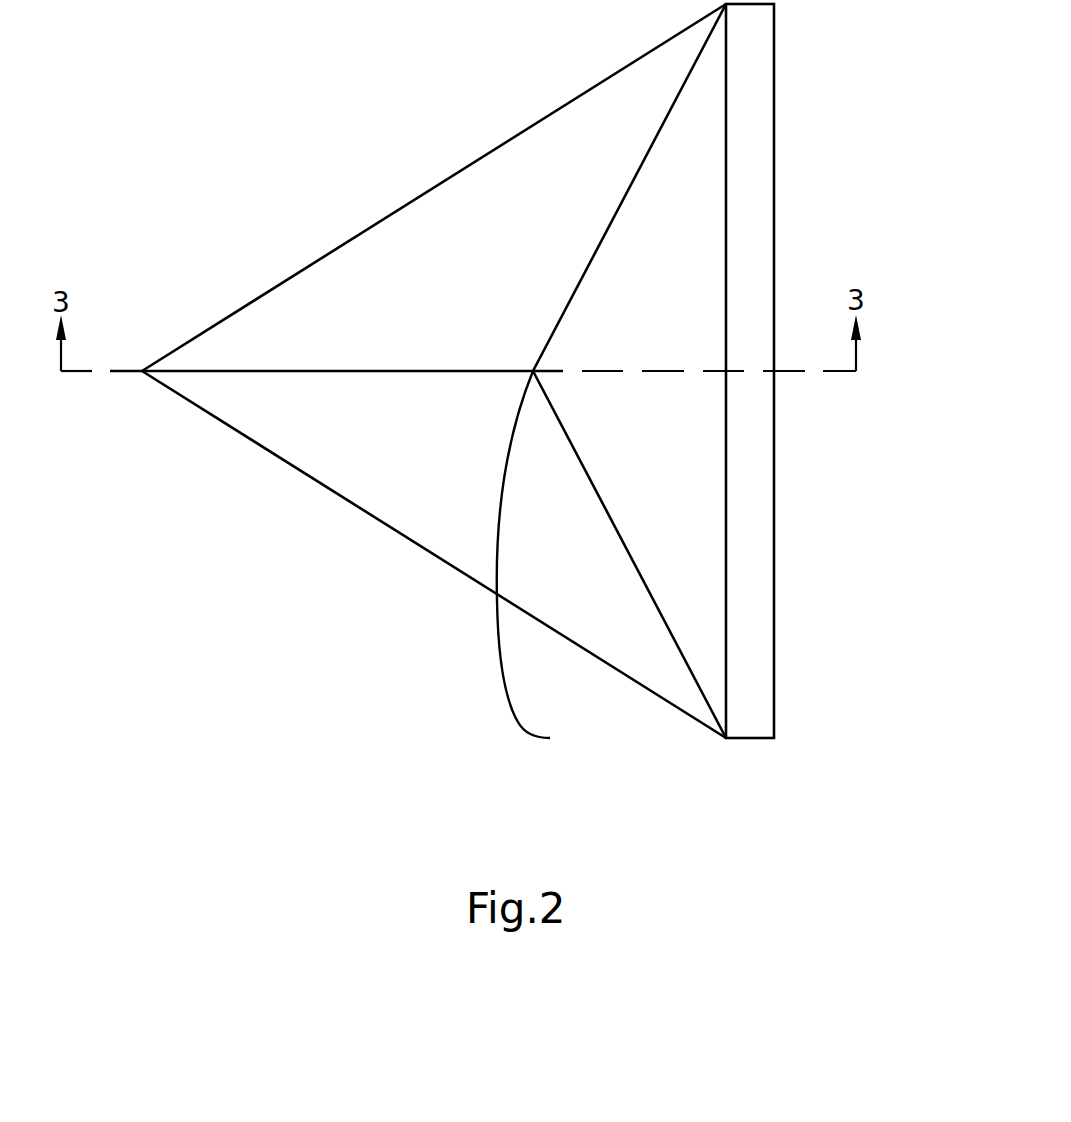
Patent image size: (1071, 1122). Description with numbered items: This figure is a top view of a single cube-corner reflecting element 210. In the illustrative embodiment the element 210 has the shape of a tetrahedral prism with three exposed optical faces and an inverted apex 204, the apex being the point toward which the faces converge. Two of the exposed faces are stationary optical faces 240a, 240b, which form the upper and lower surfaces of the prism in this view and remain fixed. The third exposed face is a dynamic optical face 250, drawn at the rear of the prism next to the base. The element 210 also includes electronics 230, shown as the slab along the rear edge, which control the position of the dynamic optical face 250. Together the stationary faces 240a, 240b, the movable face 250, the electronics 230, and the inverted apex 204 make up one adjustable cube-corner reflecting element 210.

The cube-corner reflecting element 210 is at (226, 502).
The stationary optical face 240a is at (421, 248).
The stationary optical face 240b is at (433, 503).
The dynamic optical face 250 is at (680, 242).
The electronics 230 is at (750, 522).
The inverted apex 204 is at (559, 562).